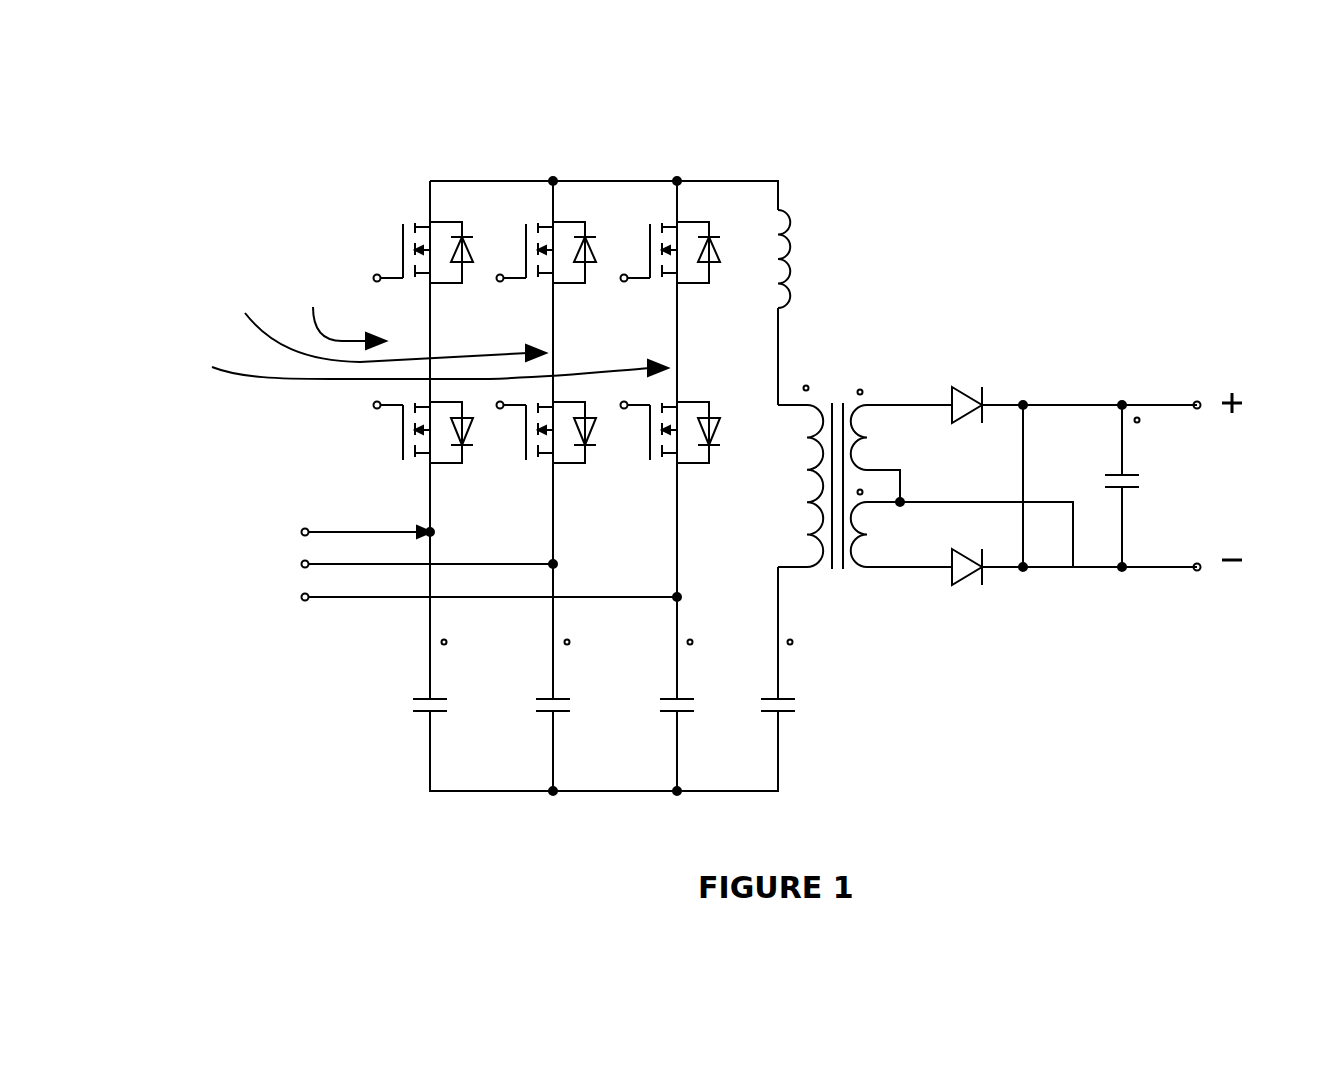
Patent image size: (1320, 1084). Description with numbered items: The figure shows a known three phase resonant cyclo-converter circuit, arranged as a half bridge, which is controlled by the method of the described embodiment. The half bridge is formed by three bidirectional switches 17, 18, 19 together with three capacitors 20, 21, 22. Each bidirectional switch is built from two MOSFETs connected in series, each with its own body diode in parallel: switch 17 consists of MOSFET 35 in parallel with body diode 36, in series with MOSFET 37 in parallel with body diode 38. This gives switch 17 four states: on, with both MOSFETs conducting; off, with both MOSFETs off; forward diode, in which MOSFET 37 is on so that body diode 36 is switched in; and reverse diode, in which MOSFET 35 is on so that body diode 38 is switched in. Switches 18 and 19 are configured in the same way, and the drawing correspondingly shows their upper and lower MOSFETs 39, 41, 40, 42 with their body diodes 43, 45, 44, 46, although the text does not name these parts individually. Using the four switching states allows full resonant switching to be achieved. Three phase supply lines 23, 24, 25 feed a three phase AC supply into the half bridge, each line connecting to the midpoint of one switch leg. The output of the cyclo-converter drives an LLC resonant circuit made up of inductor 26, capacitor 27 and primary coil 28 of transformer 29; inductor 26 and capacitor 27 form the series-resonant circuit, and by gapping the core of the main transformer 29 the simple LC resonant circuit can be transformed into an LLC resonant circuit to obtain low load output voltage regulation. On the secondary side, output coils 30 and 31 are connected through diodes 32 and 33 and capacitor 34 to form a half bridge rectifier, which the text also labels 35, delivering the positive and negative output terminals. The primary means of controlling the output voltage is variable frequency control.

The bidirectional switch 17 is at (342, 305).
The bidirectional switch 18 is at (383, 316).
The bidirectional switch 19 is at (418, 360).
The capacitor 20 is at (412, 727).
The capacitor 21 is at (547, 723).
The capacitor 22 is at (670, 725).
The three phase supply line 23 is at (342, 532).
The three phase supply line 24 is at (403, 562).
The three phase supply line 25 is at (465, 592).
The inductor 26 is at (807, 222).
The capacitor 27 is at (793, 723).
The primary coil 28 is at (812, 400).
The transformer 29 is at (840, 590).
The output coil 30 is at (865, 422).
The output coil 31 is at (867, 550).
The diode 32 is at (957, 385).
The diode 33 is at (963, 592).
The capacitor 34 is at (1155, 483).
The MOSFET 35 is at (383, 242).
The body diode 36 is at (467, 225).
The MOSFET 37 is at (383, 437).
The body diode 38 is at (467, 460).
The switch 39 is at (510, 220).
The switch 40 is at (518, 442).
The switch 41 is at (638, 220).
The switch 42 is at (657, 470).
The body diode 43 is at (595, 222).
The body diode 44 is at (592, 457).
The body diode 45 is at (722, 245).
The body diode 46 is at (718, 433).